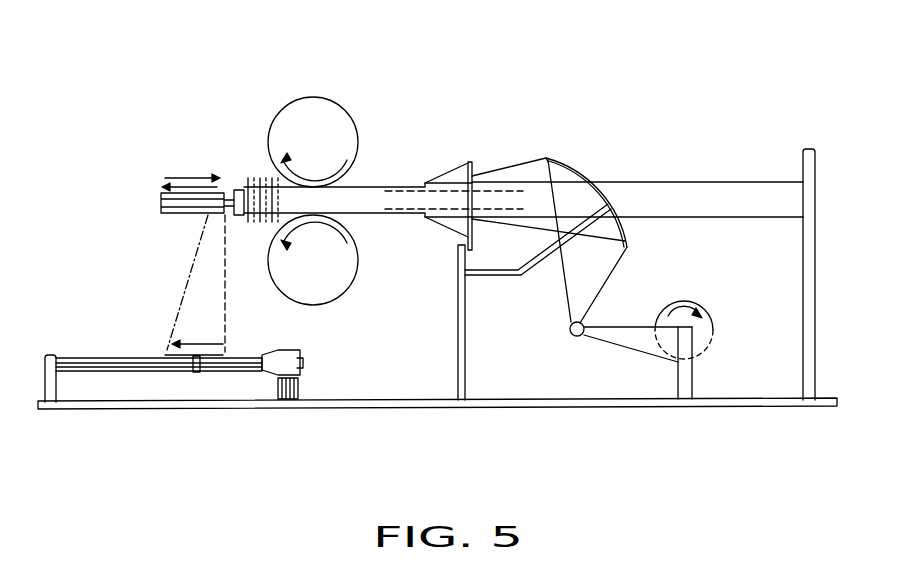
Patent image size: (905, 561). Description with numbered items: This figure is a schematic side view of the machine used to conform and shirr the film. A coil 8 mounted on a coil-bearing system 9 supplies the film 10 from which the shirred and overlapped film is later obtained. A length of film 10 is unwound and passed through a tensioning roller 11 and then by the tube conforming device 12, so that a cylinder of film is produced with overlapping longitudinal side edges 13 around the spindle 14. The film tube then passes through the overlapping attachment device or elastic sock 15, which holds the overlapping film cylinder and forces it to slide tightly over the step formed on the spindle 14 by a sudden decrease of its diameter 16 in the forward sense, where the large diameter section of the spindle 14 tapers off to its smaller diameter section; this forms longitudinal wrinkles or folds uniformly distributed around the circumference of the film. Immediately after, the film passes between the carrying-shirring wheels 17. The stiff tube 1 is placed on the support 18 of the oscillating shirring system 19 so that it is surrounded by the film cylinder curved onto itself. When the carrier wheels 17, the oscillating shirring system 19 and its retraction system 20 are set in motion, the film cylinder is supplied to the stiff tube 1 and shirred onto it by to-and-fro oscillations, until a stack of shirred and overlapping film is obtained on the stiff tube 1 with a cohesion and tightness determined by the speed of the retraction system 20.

The stiff tube 1 is at (303, 222).
The coil 8 is at (717, 345).
The coil-bearing system 9 is at (688, 345).
The film 10 is at (622, 350).
The tensioning roller 11 is at (569, 335).
The tube conforming device 12 is at (577, 173).
The overlapping longitudinal side edges 13 is at (507, 170).
The spindle 14 is at (716, 188).
The overlapping attachment device or elastic sock 15 is at (469, 162).
The decrease of diameter 16 is at (428, 180).
The carrying-shirring wheels 17 is at (315, 132).
The support 18 is at (237, 185).
The oscillating shirring system 19 is at (190, 173).
The retraction system 20 is at (175, 305).